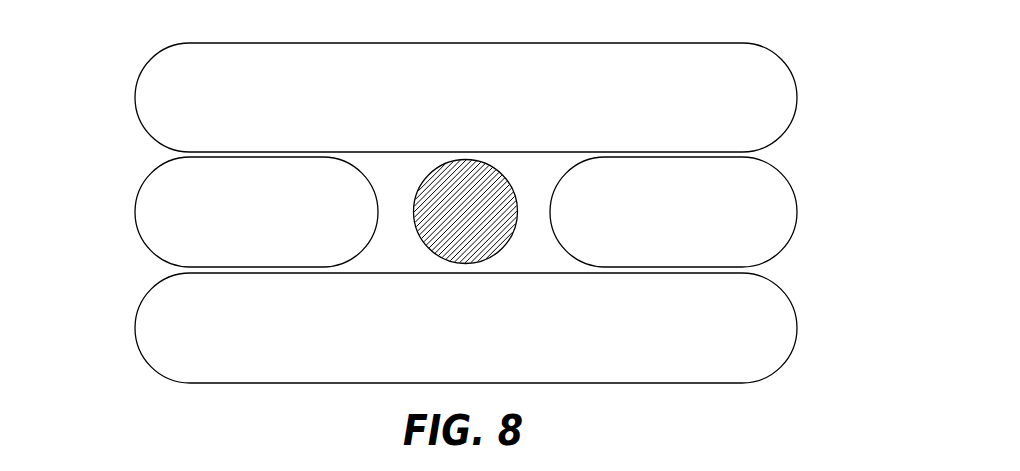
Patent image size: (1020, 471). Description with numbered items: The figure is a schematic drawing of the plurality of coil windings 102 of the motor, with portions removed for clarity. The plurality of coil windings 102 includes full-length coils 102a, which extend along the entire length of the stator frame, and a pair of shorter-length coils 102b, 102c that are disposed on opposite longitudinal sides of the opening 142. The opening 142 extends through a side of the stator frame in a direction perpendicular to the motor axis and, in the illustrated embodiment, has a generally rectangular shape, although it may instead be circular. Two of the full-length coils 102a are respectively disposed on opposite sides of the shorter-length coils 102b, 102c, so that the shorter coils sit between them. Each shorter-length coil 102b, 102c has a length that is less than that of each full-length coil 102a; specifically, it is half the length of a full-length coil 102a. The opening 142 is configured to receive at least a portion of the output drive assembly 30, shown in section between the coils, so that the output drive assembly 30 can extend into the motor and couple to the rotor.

The plurality of coil windings 102 is at (105, 281).
The full-length coil 102a is at (173, 90).
The shorter-length coil 102b is at (780, 205).
The shorter-length coil 102c is at (168, 212).
The output drive assembly 30 is at (510, 240).
The opening 142 is at (396, 238).